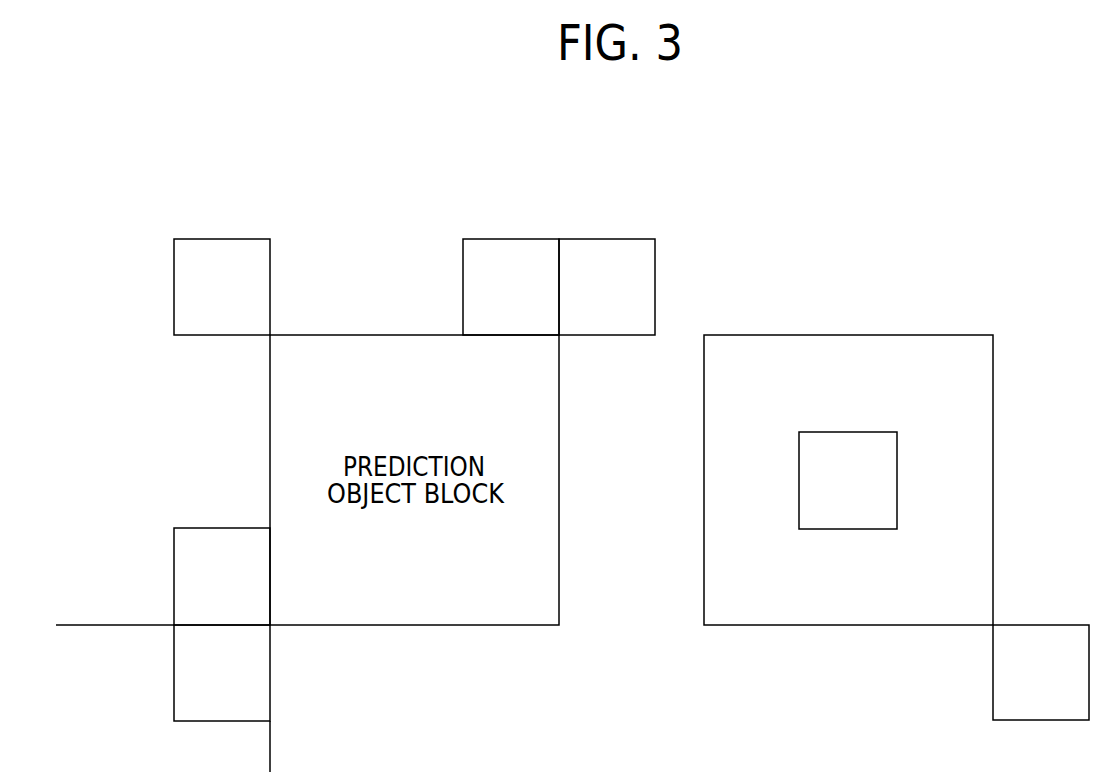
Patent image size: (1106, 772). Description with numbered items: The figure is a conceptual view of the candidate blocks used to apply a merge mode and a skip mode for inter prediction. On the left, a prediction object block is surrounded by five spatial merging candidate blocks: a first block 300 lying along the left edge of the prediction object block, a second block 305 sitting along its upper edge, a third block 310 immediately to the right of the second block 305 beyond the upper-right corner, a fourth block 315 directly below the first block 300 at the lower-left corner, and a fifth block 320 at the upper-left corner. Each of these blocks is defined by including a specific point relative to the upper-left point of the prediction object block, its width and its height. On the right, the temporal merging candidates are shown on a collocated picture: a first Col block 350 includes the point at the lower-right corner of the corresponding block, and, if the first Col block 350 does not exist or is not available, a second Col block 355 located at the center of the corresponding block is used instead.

The first block 300 is at (222, 576).
The second block 305 is at (511, 287).
The third block 310 is at (607, 287).
The fourth block 315 is at (222, 673).
The fifth block 320 is at (222, 287).
The first Col block 350 is at (1041, 672).
The second Col block 355 is at (848, 480).